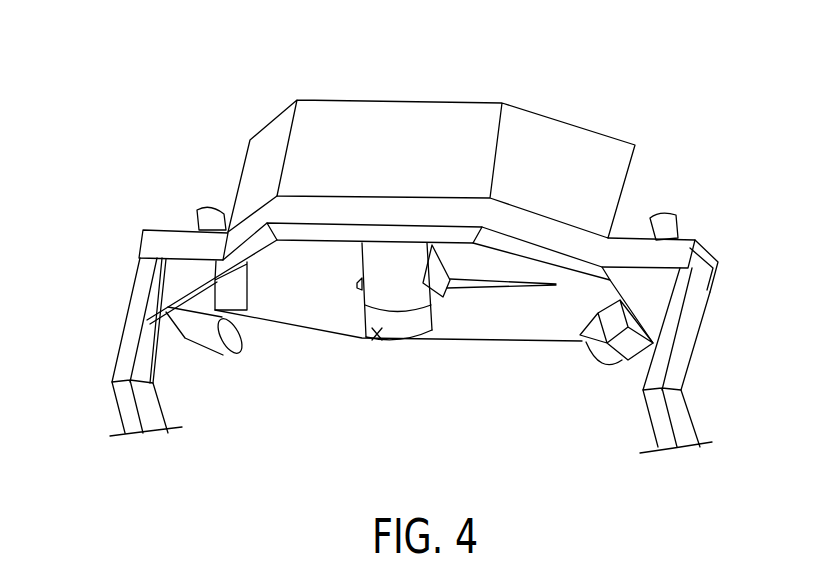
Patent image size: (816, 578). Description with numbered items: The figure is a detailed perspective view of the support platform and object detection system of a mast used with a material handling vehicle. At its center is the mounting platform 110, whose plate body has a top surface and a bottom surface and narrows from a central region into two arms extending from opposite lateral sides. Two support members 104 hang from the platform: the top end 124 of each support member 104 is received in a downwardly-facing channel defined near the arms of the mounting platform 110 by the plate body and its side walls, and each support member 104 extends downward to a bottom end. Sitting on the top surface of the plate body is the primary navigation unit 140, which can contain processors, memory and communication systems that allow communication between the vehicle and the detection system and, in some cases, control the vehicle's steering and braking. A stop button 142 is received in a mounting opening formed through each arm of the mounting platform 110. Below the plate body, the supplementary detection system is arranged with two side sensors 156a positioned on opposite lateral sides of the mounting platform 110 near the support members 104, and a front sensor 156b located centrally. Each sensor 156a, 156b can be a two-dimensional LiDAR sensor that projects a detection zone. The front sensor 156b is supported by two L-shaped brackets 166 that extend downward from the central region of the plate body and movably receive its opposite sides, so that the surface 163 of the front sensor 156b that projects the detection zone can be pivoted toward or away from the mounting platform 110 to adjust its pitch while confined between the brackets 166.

The support member 104 is at (127, 407).
The mounting platform 110 is at (632, 240).
The top end 124 is at (142, 310).
The primary navigation unit 140 is at (440, 132).
The stop button 142 is at (210, 207).
The side sensor 156a is at (190, 350).
The front sensor 156b is at (370, 340).
The surface 163 is at (398, 342).
The L-shaped bracket 166 is at (358, 288).